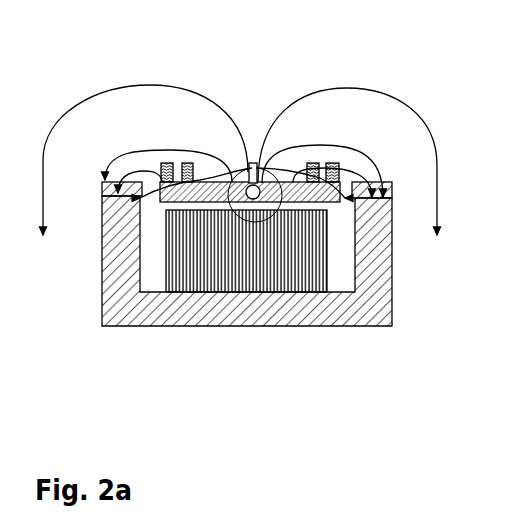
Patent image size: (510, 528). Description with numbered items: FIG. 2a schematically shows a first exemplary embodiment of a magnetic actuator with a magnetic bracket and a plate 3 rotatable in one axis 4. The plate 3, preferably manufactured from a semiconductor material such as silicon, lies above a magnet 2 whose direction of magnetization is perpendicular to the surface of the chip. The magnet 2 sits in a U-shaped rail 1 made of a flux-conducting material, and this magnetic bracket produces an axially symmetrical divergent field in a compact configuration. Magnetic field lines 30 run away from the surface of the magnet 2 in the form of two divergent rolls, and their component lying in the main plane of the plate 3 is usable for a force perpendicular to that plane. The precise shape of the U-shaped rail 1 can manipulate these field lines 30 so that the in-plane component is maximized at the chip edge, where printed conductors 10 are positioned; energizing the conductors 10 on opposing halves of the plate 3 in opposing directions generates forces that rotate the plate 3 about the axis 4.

The U-shaped rail 1 is at (118, 326).
The magnet 2 is at (318, 270).
The plate 3 is at (177, 173).
The axis of rotation 4 is at (251, 163).
The printed conductors 10 is at (327, 183).
The magnetic field lines 30 is at (106, 93).